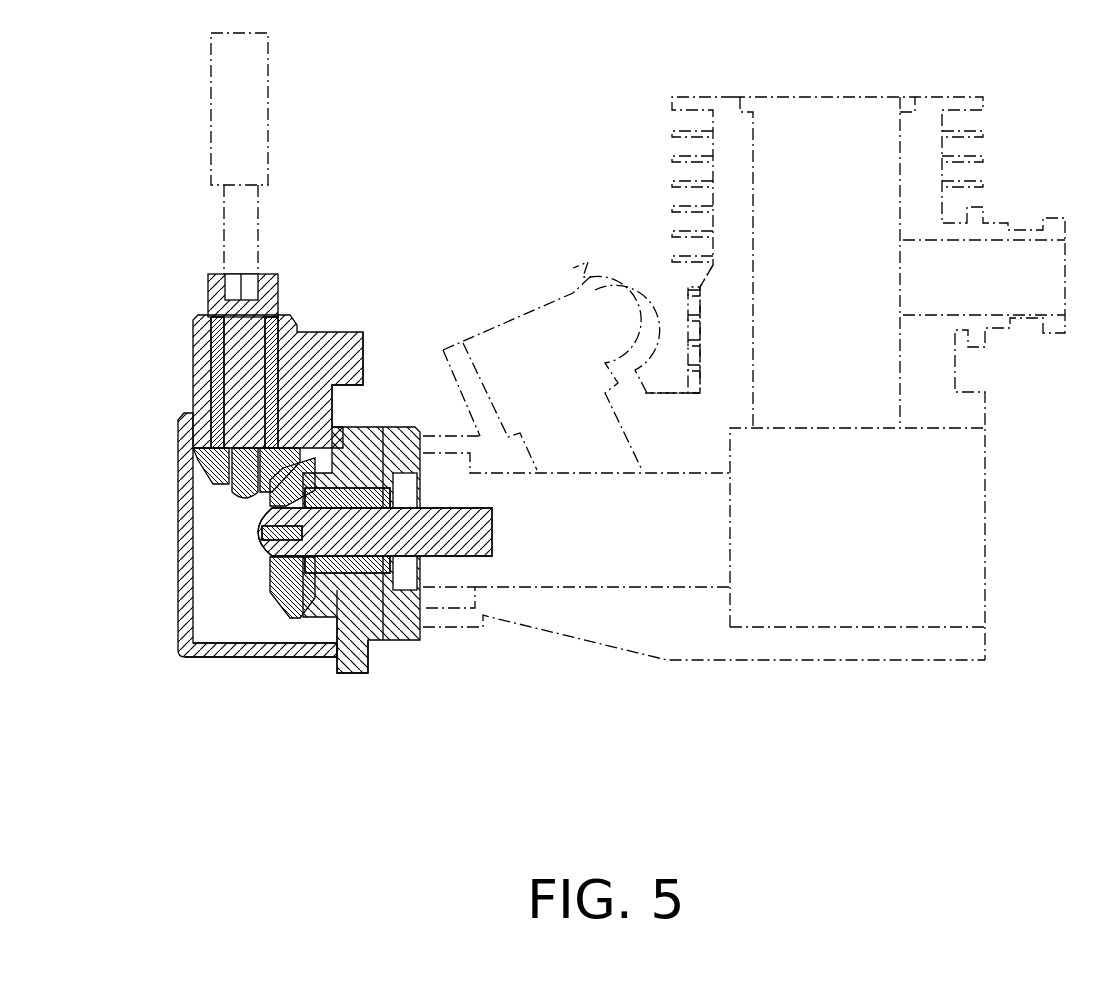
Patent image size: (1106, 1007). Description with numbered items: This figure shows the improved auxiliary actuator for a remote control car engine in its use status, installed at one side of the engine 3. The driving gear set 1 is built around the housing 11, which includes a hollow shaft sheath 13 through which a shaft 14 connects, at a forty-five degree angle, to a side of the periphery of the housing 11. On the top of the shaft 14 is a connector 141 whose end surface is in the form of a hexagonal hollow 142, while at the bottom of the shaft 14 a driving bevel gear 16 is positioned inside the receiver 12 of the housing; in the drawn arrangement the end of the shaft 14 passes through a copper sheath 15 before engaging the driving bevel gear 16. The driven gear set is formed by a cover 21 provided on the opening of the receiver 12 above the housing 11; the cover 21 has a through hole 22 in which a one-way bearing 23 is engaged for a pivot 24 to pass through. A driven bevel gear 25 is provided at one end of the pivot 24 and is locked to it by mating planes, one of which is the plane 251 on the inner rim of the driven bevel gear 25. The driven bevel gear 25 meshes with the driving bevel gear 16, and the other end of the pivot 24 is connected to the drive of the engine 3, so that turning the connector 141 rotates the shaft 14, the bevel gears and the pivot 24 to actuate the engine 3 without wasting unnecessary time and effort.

The driving gear set 1 is at (172, 628).
The housing 11 is at (300, 643).
The receiver 12 is at (232, 620).
The hollow shaft sheath 13 is at (195, 346).
The shaft 14 is at (212, 395).
The connector 141 is at (280, 275).
The hexagonal hollow 142 is at (210, 285).
The copper sheath 15 is at (297, 322).
The driving bevel gear 16 is at (210, 470).
The cover 21 is at (352, 664).
The through hole 22 is at (368, 500).
The one-way bearing 23 is at (388, 645).
The pivot 24 is at (512, 522).
The driven bevel gear 25 is at (282, 608).
The plane 251 is at (268, 548).
The engine 3 is at (655, 178).